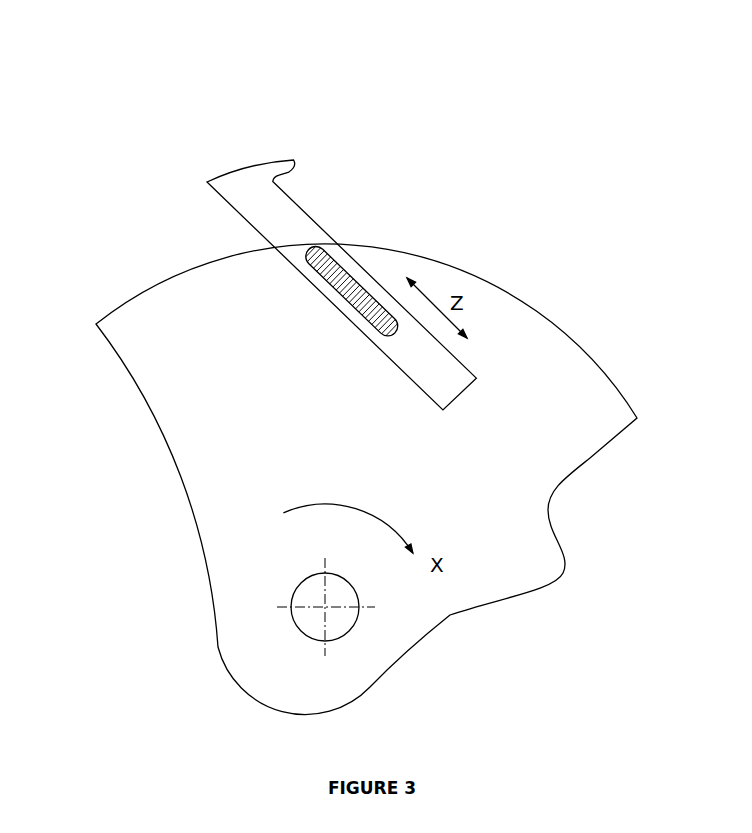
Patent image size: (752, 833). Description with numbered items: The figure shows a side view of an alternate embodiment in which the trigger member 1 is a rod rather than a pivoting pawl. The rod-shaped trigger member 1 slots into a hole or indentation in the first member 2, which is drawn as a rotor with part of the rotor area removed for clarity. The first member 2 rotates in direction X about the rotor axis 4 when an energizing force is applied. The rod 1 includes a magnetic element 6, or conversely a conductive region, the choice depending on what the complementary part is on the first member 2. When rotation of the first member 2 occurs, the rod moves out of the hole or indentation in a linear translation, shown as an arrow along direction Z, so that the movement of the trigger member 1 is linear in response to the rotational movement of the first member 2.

The trigger member 1 is at (297, 193).
The first member 2 is at (230, 554).
The rotor axis 4 is at (365, 623).
The magnetic element 6 is at (362, 272).